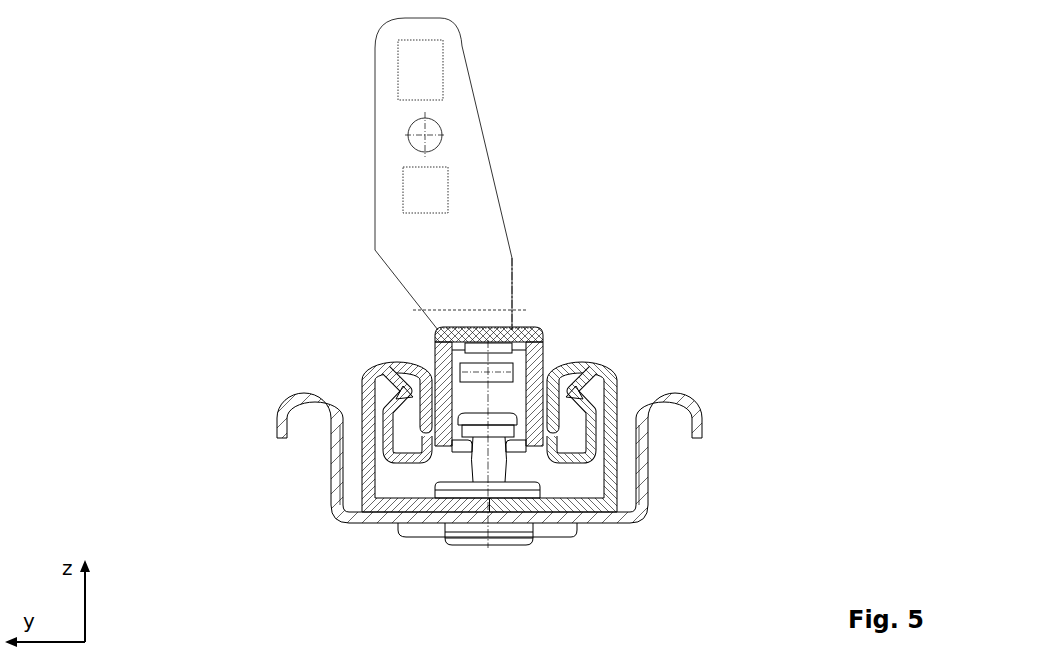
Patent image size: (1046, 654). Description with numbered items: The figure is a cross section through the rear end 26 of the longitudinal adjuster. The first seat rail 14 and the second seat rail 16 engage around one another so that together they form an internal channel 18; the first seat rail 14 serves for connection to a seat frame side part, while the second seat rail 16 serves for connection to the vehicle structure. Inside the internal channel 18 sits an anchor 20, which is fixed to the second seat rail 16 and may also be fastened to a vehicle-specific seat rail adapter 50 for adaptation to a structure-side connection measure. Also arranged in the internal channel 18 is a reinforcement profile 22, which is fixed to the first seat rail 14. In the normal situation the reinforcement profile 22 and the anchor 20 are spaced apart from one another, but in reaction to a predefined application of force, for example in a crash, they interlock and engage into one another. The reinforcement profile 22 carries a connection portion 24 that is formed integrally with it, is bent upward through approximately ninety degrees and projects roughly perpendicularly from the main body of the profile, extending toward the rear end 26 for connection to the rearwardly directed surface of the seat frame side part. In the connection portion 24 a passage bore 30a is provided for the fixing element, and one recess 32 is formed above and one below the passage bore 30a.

The first seat rail 14 is at (479, 371).
The second seat rail 16 is at (362, 383).
The internal channel 18 is at (590, 480).
The anchor 20 is at (490, 462).
The reinforcement profile 22 is at (522, 350).
The connection portion 24 is at (500, 171).
The rear end 26 is at (469, 292).
The passage bore 30a is at (428, 132).
The recess 32 is at (427, 75).
The vehicle-specific seat rail adapter 50 is at (340, 505).